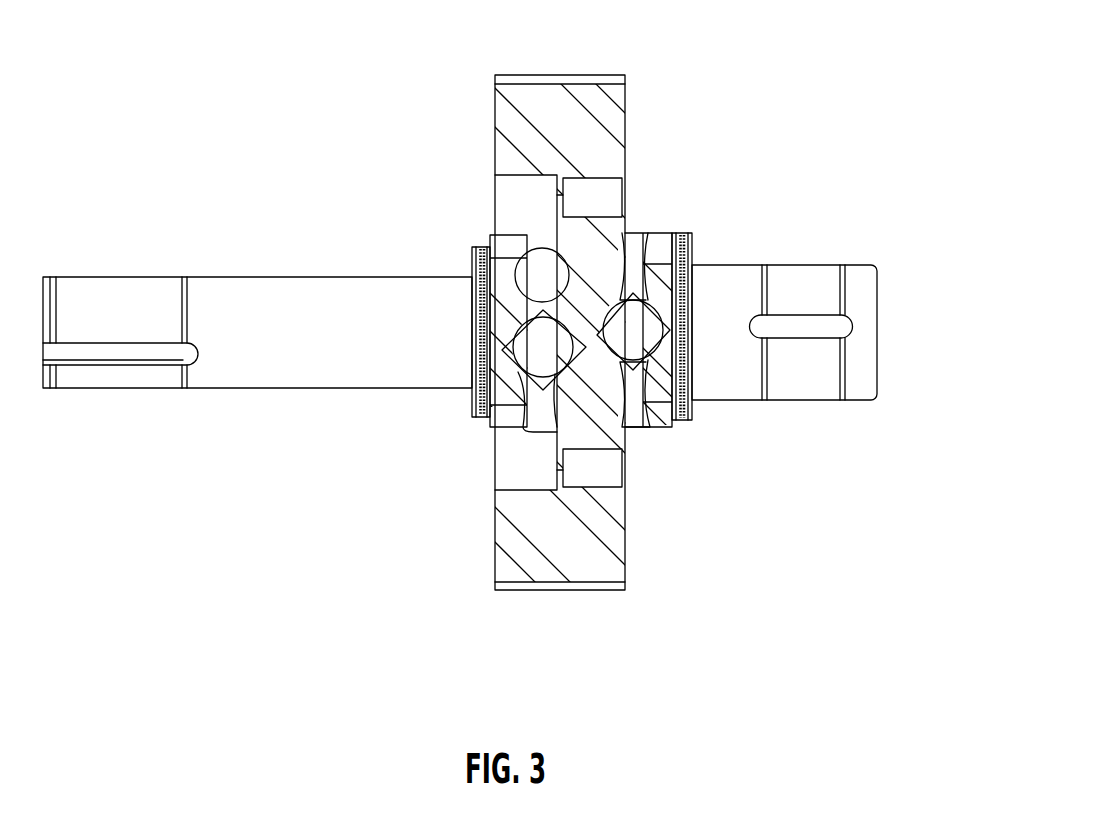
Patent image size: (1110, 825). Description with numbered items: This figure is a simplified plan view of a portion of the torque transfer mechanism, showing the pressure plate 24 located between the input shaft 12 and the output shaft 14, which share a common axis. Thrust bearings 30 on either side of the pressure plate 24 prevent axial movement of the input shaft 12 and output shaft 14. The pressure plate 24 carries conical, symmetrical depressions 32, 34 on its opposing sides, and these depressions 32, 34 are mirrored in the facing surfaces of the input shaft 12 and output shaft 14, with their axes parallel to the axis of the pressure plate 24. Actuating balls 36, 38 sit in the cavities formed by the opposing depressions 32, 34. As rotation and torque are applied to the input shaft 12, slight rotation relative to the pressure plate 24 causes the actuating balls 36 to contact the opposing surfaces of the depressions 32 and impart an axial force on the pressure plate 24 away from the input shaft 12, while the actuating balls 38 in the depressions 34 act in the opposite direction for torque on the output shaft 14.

The input shaft 12 is at (230, 388).
The output shaft 14 is at (807, 400).
The pressure plate 24 is at (627, 125).
The thrust bearings 30 is at (470, 258).
The depressions 32 is at (513, 357).
The depressions 34 is at (617, 385).
The actuating balls 36 is at (541, 352).
The actuating balls 38 is at (640, 340).